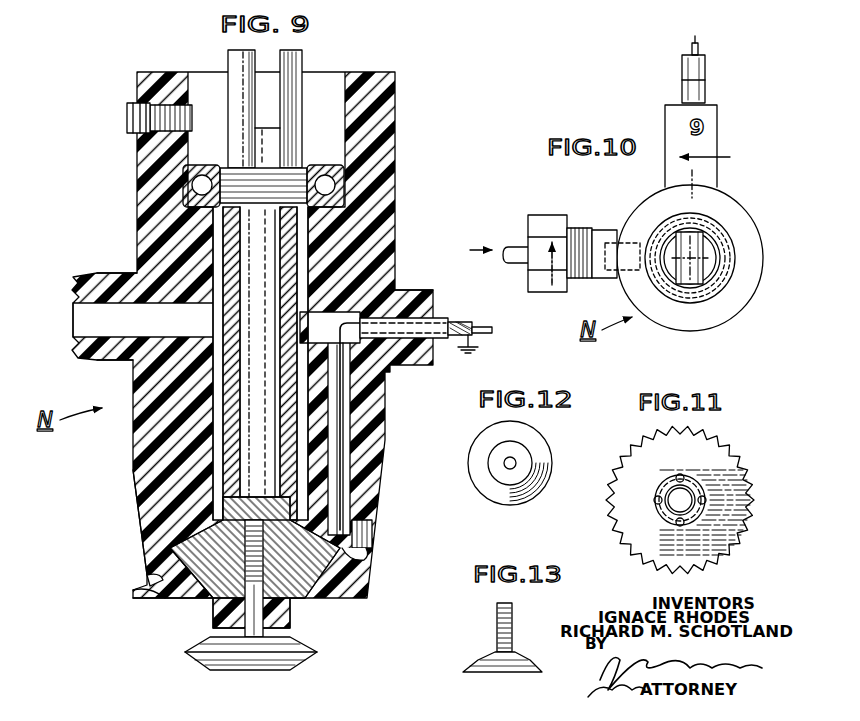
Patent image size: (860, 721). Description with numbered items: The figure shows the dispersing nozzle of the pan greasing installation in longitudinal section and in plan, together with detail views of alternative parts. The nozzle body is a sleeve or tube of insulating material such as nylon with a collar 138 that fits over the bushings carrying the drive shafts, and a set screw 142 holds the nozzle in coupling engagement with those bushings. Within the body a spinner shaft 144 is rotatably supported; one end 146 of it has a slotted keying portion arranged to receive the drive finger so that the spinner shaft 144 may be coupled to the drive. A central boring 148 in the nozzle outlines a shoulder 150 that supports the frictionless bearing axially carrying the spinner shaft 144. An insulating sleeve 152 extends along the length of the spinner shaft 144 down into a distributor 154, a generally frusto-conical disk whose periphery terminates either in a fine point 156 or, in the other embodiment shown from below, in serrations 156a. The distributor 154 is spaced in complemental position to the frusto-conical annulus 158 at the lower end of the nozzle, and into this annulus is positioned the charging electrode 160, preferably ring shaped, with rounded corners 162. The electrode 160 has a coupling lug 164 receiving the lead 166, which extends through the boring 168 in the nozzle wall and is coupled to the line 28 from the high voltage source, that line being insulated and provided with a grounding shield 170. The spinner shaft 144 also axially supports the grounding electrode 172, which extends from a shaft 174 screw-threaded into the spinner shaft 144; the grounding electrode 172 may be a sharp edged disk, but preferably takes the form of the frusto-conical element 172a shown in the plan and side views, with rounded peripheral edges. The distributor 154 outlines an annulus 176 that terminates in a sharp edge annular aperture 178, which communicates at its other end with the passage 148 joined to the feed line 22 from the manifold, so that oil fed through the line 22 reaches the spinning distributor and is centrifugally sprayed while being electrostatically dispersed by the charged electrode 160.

In FIG. 9, the oil line 22 is at (82, 318).
In FIG. 10, the oil line 22 is at (513, 247).
In FIG. 9, the line 28 is at (482, 327).
In FIG. 10, the line 28 is at (693, 88).
In FIG. 9, the collar 138 is at (380, 100).
In FIG. 10, the collar 138 is at (737, 300).
In FIG. 9, the set screw 142 is at (128, 118).
In FIG. 9, the spinner shaft 144 is at (265, 152).
In FIG. 10, the spinner shaft 144 is at (682, 242).
In FIG. 9, the slotted keying end 146 is at (243, 60).
In FIG. 10, the slotted keying end 146 is at (705, 253).
In FIG. 9, the central boring 148 is at (222, 230).
In FIG. 9, the shoulder 150 is at (355, 232).
In FIG. 9, the insulating sleeve 152 is at (290, 258).
In FIG. 9, the distributor 154 is at (192, 600).
In FIG. 9, the fine point 156 is at (133, 594).
In FIG. 11, the serrations 156a is at (750, 487).
In FIG. 9, the frusto-conical annulus 158 is at (352, 558).
In FIG. 9, the charging electrode 160 is at (208, 542).
In FIG. 9, the rounded corners 162 is at (150, 578).
In FIG. 9, the coupling lug 164 is at (362, 535).
In FIG. 9, the lead 166 is at (337, 440).
In FIG. 9, the boring 168 is at (343, 392).
In FIG. 9, the grounding shield 170 is at (467, 318).
In FIG. 9, the grounding electrode 172 is at (202, 660).
In FIG. 12, the frusto-conical element 172a is at (483, 490).
In FIG. 13, the frusto-conical element 172a is at (490, 672).
In FIG. 9, the shaft 174 is at (252, 605).
In FIG. 12, the shaft 174 is at (514, 461).
In FIG. 13, the shaft 174 is at (500, 630).
In FIG. 9, the annulus 176 is at (135, 472).
In FIG. 9, the sharp edge annular aperture 178 is at (152, 585).